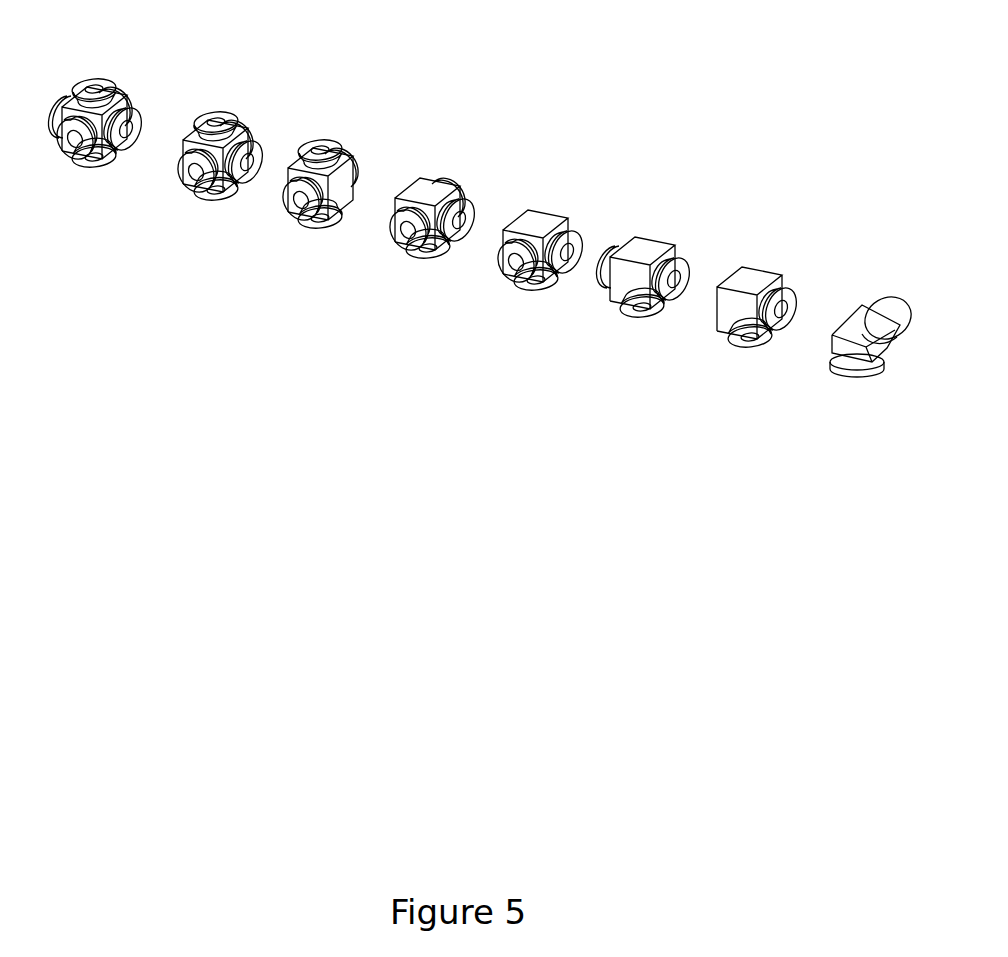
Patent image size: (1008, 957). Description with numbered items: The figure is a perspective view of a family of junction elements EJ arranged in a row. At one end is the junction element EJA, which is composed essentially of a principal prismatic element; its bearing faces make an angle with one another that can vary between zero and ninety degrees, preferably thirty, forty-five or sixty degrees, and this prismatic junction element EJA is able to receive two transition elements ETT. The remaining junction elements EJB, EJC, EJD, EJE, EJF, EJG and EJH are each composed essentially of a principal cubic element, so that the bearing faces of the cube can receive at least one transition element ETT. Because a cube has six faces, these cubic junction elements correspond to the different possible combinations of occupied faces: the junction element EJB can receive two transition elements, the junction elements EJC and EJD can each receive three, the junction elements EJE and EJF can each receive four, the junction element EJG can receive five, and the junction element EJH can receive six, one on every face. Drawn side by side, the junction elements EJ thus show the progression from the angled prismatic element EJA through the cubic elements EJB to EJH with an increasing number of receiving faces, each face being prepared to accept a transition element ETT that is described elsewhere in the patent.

The junction element EJ is at (445, 138).
The junction element EJH is at (99, 205).
The junction element EJG is at (203, 238).
The junction element EJF is at (298, 273).
The junction element EJE is at (401, 297).
The junction element EJD is at (512, 323).
The junction element EJC is at (626, 348).
The junction element EJB is at (737, 373).
The junction element EJA is at (848, 405).